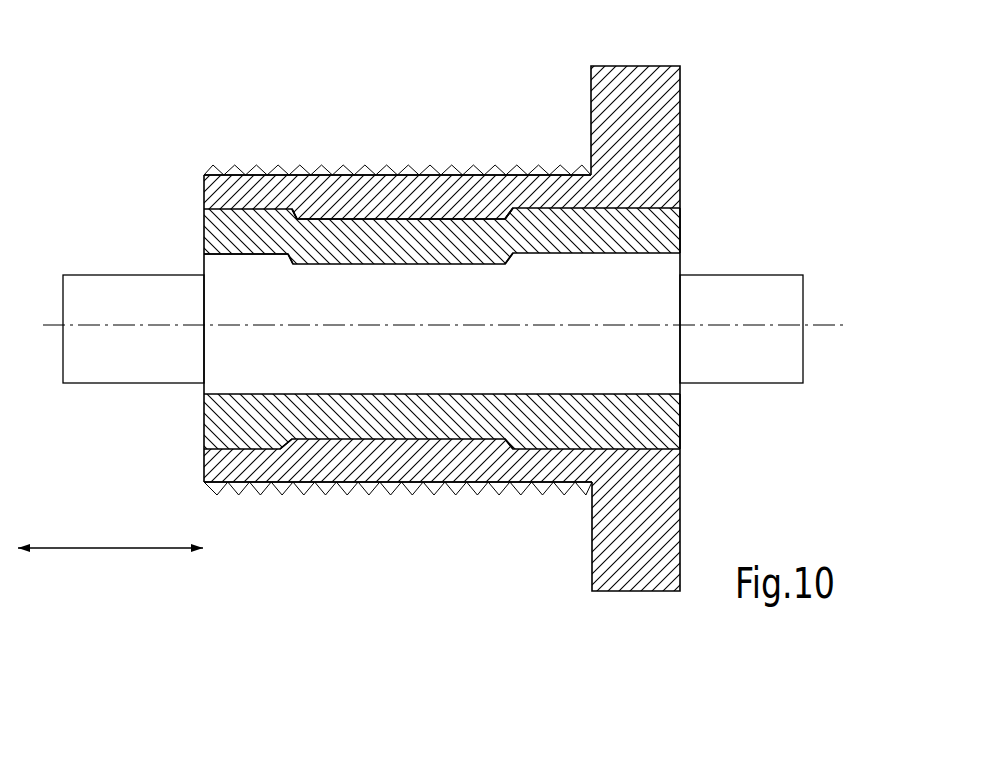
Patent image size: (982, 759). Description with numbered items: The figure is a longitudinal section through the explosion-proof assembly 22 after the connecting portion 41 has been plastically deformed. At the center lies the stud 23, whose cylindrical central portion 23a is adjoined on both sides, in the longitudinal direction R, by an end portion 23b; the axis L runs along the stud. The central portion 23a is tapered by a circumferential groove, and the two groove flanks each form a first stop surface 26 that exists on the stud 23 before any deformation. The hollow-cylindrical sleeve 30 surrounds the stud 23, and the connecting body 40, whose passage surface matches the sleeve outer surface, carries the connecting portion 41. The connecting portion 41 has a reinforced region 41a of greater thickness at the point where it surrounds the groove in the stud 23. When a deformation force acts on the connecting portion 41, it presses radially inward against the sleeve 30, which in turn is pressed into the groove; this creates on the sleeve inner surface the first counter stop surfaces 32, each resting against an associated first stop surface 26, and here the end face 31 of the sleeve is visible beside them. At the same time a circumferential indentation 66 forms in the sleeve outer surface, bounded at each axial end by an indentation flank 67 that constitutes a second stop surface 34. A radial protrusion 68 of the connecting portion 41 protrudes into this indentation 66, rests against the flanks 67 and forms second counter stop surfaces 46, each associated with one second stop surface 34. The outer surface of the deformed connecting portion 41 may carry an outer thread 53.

The explosion-proof assembly 22 is at (754, 96).
The stud 23 is at (715, 272).
The central portion 23a is at (424, 375).
The end portion 23b is at (107, 362).
The first stop surface 26 is at (298, 252).
The sleeve 30 is at (205, 228).
The inner sleeve end face 31 is at (240, 258).
The first counter stop surface 32 is at (283, 259).
The second stop surface 34 is at (402, 213).
The connecting body 40 is at (666, 163).
The connecting portion 41 is at (192, 172).
The reinforced region 41a is at (372, 200).
The second counter stop surface 46 is at (285, 438).
The outer thread 53 is at (398, 494).
The circumferential indentation 66 is at (435, 218).
The indentation flank 67 is at (292, 205).
The radial protrusion 68 is at (421, 442).
The longitudinal axis L is at (830, 327).
The longitudinal direction R is at (130, 552).